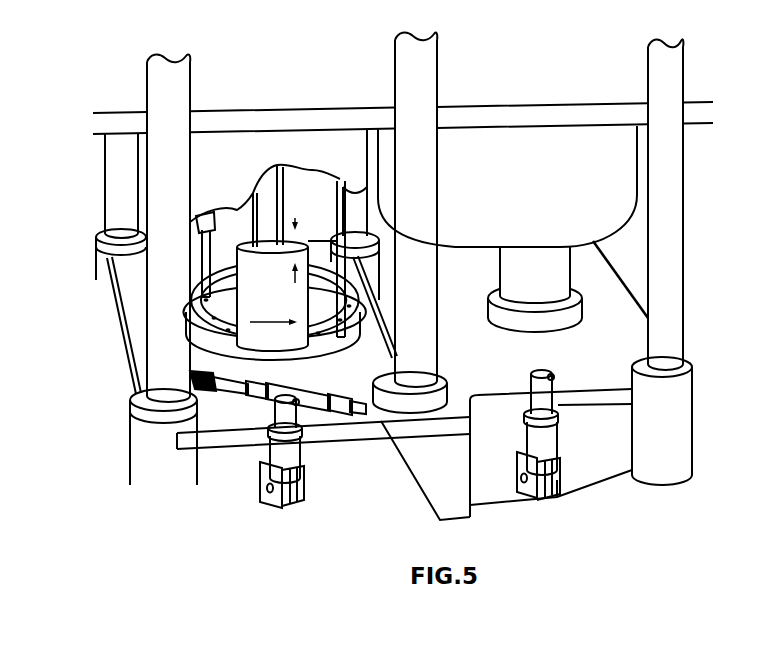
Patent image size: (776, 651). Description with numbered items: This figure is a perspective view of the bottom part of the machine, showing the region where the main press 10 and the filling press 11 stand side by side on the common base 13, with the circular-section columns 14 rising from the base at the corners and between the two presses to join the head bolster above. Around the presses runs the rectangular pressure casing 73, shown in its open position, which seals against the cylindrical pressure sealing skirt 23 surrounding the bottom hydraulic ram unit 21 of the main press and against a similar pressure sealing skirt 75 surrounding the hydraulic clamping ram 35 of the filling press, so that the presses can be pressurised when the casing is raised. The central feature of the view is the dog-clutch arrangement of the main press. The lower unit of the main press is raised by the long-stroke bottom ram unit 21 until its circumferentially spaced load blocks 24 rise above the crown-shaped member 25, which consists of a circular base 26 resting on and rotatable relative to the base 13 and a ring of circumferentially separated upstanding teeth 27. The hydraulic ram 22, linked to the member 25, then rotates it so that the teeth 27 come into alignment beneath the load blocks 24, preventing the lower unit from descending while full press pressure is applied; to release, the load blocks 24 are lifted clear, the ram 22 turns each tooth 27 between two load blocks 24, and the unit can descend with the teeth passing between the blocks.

The main press 10 is at (262, 88).
The filling press 11 is at (575, 90).
The common base 13 is at (354, 478).
The circular-section columns 14 is at (167, 203).
The bottom hydraulic ram unit 21 is at (273, 172).
The hydraulic ram 22 is at (277, 397).
The pressure sealing skirt 23 is at (203, 148).
The load blocks 24 is at (320, 217).
The crown-shaped member 25 is at (213, 214).
The circular base 26 is at (320, 363).
The teeth 27 is at (237, 265).
The hydraulic clamping ram 35 is at (535, 289).
The pressure casing 73 is at (338, 97).
The pressure sealing skirt 75 is at (573, 217).